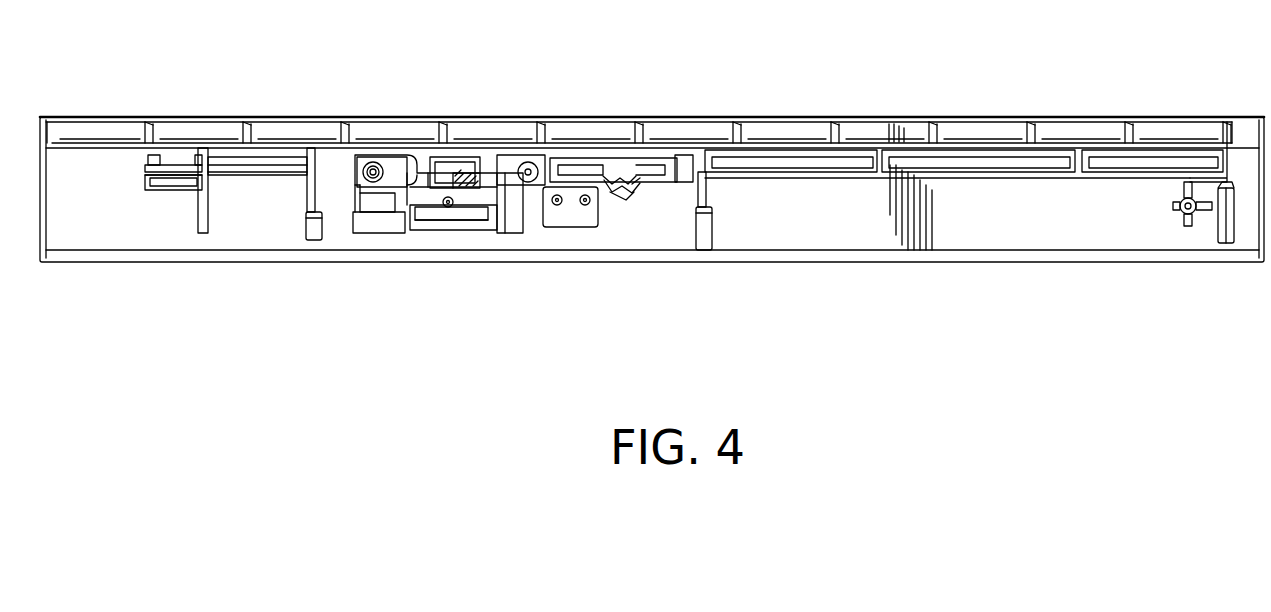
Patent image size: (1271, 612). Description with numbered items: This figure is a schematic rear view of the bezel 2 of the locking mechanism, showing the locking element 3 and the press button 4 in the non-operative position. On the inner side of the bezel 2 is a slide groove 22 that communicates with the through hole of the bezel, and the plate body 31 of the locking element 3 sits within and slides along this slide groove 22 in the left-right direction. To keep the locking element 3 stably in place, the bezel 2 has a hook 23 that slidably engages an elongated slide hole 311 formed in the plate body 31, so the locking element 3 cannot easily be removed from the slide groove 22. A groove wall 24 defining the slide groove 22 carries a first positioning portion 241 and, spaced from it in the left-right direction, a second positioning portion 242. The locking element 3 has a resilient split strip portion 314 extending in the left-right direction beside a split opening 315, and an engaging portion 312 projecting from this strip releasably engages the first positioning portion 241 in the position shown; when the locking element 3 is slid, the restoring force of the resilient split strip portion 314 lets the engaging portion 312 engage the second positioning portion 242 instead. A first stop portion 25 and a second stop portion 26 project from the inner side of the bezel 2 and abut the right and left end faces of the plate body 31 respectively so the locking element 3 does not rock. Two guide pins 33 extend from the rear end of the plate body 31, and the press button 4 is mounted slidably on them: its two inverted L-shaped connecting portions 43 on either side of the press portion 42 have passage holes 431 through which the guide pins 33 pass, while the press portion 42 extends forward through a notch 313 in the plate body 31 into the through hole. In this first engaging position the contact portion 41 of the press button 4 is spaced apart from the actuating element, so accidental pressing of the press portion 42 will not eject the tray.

The bezel 2 is at (958, 118).
The slide groove 22 is at (688, 160).
The hook 23 is at (463, 177).
The groove wall 24 is at (625, 190).
The first positioning portion 241 is at (573, 190).
The second positioning portion 242 is at (632, 188).
The first stop portion 25 is at (345, 172).
The second stop portion 26 is at (707, 172).
The locking element 3 is at (360, 238).
The plate body 31 is at (380, 207).
The slide hole 311 is at (450, 160).
The engaging portion 312 is at (608, 172).
The notch 313 is at (500, 210).
The resilient split strip portion 314 is at (662, 165).
The split opening 315 is at (645, 155).
The guide pins 33 is at (370, 160).
The press button 4 is at (427, 237).
The contact portion 41 is at (452, 208).
The press portion 42 is at (440, 223).
The connecting portions 43 is at (388, 168).
The passage holes 431 is at (372, 162).